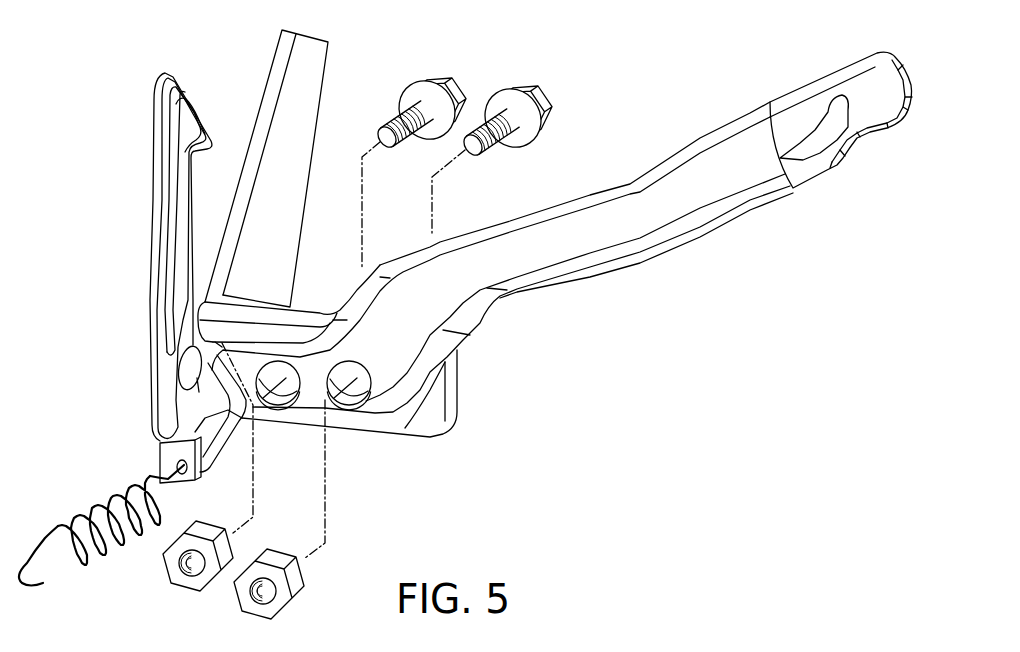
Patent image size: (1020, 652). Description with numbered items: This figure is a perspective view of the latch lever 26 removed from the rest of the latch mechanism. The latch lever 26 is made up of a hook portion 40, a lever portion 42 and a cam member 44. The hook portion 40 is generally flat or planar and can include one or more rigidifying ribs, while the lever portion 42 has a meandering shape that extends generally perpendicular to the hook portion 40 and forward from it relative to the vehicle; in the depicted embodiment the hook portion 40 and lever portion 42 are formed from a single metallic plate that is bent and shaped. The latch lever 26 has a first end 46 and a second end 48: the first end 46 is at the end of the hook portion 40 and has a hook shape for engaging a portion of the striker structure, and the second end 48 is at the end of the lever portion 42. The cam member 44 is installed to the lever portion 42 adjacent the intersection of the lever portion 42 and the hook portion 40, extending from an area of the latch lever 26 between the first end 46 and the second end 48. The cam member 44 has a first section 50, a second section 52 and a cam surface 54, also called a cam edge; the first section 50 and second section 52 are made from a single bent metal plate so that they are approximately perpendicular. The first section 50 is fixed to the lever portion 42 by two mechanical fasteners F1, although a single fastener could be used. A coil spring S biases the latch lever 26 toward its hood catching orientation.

The latch lever 26 is at (553, 257).
The hook portion 40 is at (157, 173).
The lever portion 42 is at (577, 238).
The cam member 44 is at (310, 62).
The first end 46 is at (188, 112).
The second end 48 is at (877, 87).
The first section 50 is at (427, 427).
The second section 52 is at (315, 153).
The cam surface 54 is at (264, 79).
The mechanical fasteners F1 is at (527, 80).
The coil spring S is at (88, 507).